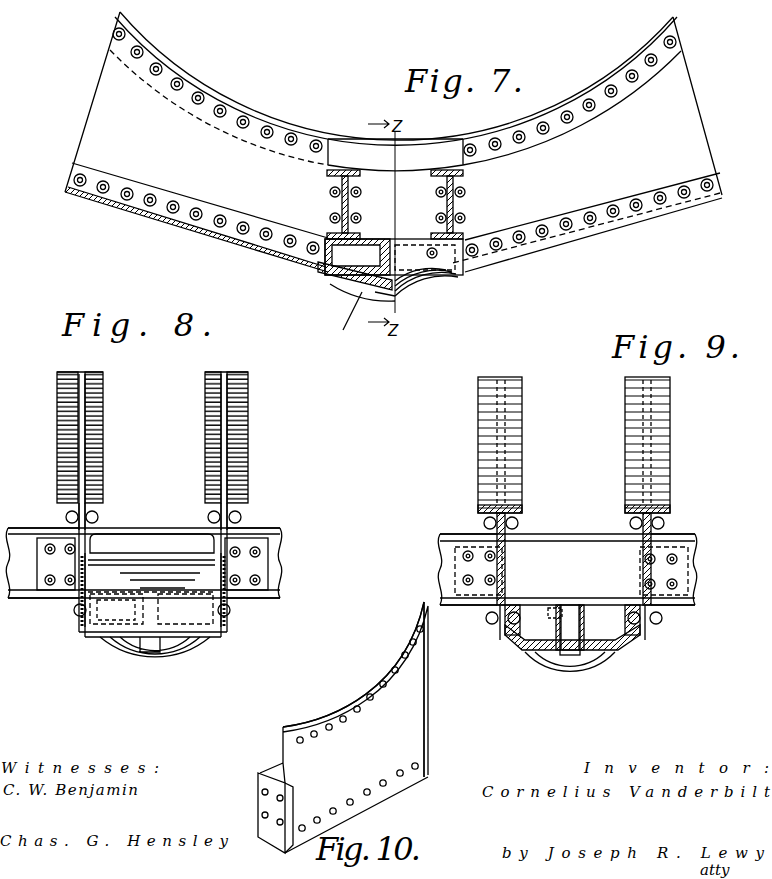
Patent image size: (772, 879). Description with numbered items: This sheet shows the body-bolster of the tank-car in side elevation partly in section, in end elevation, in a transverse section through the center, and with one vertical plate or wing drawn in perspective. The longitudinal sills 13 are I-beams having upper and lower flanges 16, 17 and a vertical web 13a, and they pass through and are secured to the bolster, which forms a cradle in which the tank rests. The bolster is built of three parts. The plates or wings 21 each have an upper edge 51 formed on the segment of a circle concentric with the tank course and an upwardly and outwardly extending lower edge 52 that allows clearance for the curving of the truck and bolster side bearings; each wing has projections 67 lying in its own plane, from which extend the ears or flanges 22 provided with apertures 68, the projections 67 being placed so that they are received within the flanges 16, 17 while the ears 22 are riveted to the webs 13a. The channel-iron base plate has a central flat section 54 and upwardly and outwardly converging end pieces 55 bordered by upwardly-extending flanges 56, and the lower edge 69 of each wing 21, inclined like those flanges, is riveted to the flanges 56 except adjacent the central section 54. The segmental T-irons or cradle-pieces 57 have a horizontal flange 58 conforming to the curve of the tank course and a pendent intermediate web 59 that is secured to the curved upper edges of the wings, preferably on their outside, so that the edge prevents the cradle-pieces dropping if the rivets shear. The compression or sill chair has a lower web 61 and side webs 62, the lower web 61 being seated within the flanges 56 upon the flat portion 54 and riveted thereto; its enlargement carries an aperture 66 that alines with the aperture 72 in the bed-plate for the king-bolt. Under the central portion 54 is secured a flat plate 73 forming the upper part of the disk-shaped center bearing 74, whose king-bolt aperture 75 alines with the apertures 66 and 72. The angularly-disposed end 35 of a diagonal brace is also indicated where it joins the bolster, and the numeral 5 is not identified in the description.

In FIG. 9, the rivet 5 is at (662, 530).
In FIG. 8, the longitudinal sills 13 is at (154, 563).
In FIG. 9, the longitudinal sills 13 is at (582, 569).
In FIG. 7, the vertical web 13a is at (350, 204).
In FIG. 8, the vertical web 13a is at (26, 570).
In FIG. 9, the vertical web 13a is at (443, 574).
In FIG. 7, the upper flange 16 is at (362, 176).
In FIG. 8, the upper flange 16 is at (144, 519).
In FIG. 9, the upper flange 16 is at (696, 546).
In FIG. 7, the lower flange 17 is at (360, 236).
In FIG. 8, the lower flange 17 is at (256, 600).
In FIG. 9, the lower flange 17 is at (698, 606).
In FIG. 7, the plates or wings 21 is at (393, 126).
In FIG. 8, the plates or wings 21 is at (92, 526).
In FIG. 9, the plates or wings 21 is at (514, 532).
In FIG. 10, the plates or wings 21 is at (355, 727).
In FIG. 7, the angular ears 22 is at (463, 204).
In FIG. 8, the angular ears 22 is at (152, 564).
In FIG. 9, the angular ears 22 is at (570, 570).
In FIG. 10, the angular ears 22 is at (286, 790).
In FIG. 8, the angularly-disposed end 35 is at (128, 594).
In FIG. 10, the upper edge 51 is at (370, 676).
In FIG. 10, the lower edge 52 is at (422, 782).
In FIG. 7, the central flat section 54 is at (346, 320).
In FIG. 7, the end pieces 55 is at (196, 229).
In FIG. 8, the end pieces 55 is at (148, 544).
In FIG. 7, the flanges 56 is at (118, 186).
In FIG. 8, the flanges 56 is at (92, 540).
In FIG. 7, the segmental T-irons 57 is at (396, 78).
In FIG. 8, the segmental T-irons 57 is at (169, 437).
In FIG. 9, the segmental T-irons 57 is at (591, 445).
In FIG. 7, the horizontal flange 58 is at (222, 93).
In FIG. 8, the horizontal flange 58 is at (104, 460).
In FIG. 9, the horizontal flange 58 is at (486, 452).
In FIG. 7, the pendent intermediate web 59 is at (694, 46).
In FIG. 8, the pendent intermediate web 59 is at (80, 392).
In FIG. 9, the pendent intermediate web 59 is at (480, 522).
In FIG. 7, the lower web 61 is at (394, 257).
In FIG. 7, the side webs 62 is at (322, 272).
In FIG. 9, the aperture 66 is at (562, 616).
In FIG. 10, the projections 67 is at (268, 765).
In FIG. 10, the apertures 68 is at (268, 826).
In FIG. 7, the lower edge 69 is at (628, 226).
In FIG. 9, the lower edge 69 is at (506, 642).
In FIG. 9, the aperture 72 is at (572, 656).
In FIG. 7, the flat plate 73 is at (324, 288).
In FIG. 8, the flat plate 73 is at (210, 640).
In FIG. 9, the flat plate 73 is at (530, 652).
In FIG. 7, the disk-shaped center bearing 74 is at (432, 290).
In FIG. 8, the disk-shaped center bearing 74 is at (180, 652).
In FIG. 9, the disk-shaped center bearing 74 is at (604, 662).
In FIG. 7, the king-bolt aperture 75 is at (382, 294).
In FIG. 9, the king-bolt aperture 75 is at (578, 652).